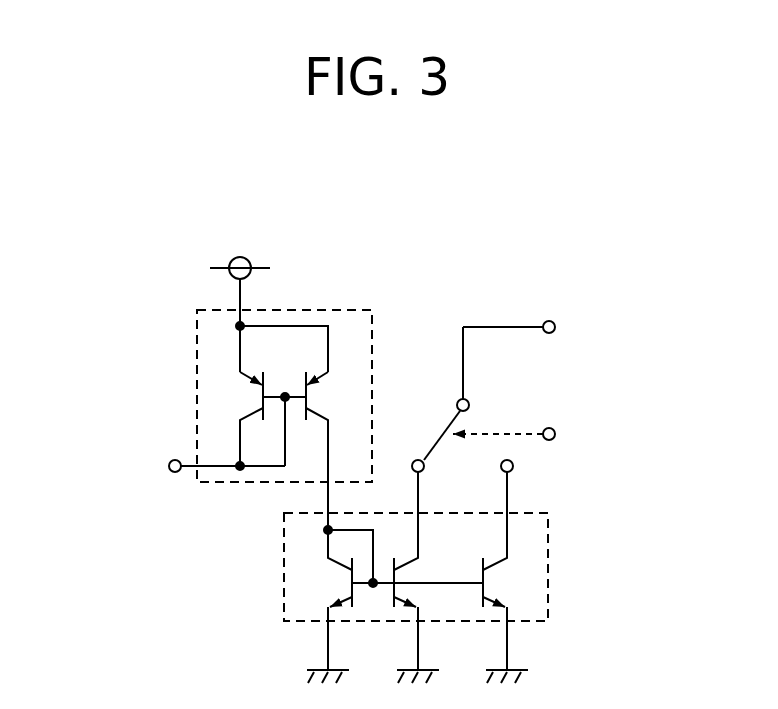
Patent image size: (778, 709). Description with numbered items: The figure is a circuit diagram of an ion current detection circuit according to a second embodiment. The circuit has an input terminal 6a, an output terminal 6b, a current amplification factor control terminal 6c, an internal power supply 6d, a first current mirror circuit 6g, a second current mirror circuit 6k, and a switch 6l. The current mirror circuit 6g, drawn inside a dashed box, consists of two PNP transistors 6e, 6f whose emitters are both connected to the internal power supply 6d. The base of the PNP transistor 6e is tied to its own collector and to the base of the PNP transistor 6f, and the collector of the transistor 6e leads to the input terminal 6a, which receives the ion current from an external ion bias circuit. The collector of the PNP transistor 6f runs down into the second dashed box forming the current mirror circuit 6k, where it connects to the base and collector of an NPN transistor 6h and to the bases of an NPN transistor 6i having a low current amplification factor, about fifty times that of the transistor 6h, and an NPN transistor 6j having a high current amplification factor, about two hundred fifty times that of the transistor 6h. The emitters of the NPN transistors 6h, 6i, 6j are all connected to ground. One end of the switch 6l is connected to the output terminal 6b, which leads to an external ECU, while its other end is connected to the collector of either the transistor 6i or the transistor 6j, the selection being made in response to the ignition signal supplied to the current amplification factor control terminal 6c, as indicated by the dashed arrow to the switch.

The input terminal 6a is at (168, 466).
The output terminal 6b is at (556, 327).
The current amplification factor control terminal 6c is at (556, 434).
The internal power supply 6d is at (240, 257).
The PNP transistor 6e is at (245, 397).
The PNP transistor 6f is at (322, 397).
The current mirror circuit 6g is at (325, 309).
The NPN transistor 6h is at (332, 581).
The NPN transistor having a low current amplification factor 6i is at (418, 590).
The NPN transistor having a high current amplification factor 6j is at (500, 583).
The current mirror circuit 6k is at (549, 527).
The switch 6l is at (455, 425).